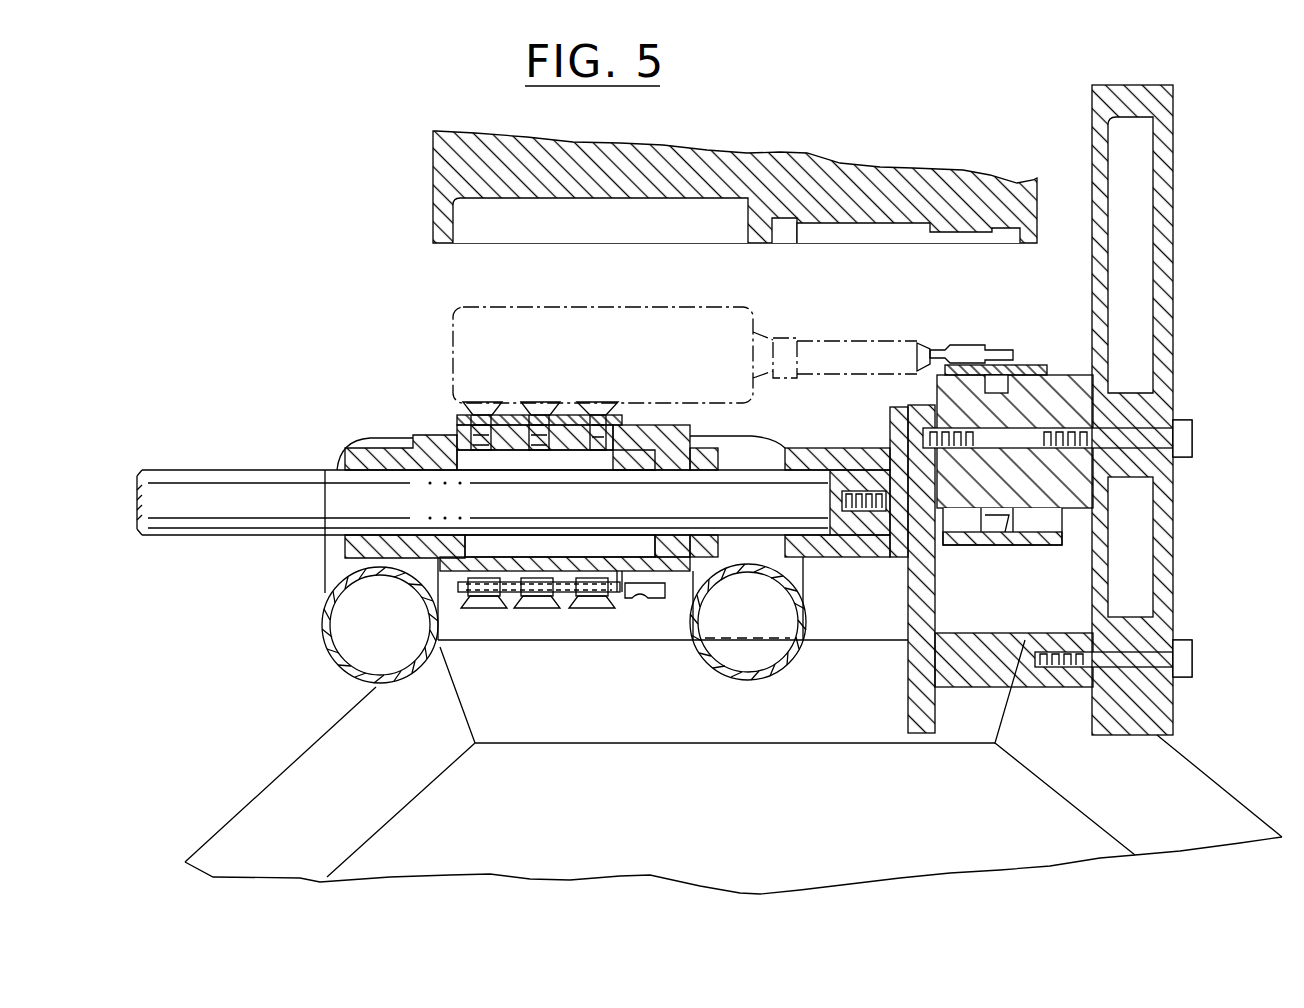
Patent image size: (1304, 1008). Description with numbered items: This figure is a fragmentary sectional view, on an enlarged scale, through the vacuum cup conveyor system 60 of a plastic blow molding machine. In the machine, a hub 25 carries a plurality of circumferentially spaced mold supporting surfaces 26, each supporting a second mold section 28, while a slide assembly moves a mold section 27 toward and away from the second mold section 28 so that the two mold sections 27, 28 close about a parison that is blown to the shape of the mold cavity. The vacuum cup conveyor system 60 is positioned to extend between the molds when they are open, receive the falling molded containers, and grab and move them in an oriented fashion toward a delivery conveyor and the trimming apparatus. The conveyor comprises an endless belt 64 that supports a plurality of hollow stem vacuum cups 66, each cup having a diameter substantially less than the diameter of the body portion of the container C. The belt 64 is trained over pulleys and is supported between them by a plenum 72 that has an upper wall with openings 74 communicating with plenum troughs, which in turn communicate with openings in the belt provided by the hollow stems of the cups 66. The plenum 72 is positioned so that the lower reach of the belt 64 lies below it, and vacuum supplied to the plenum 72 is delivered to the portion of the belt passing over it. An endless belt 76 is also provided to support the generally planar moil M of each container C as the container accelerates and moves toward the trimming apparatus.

The hub 25 is at (762, 832).
The mold supporting surface 26 is at (862, 745).
The mold section 27 is at (938, 182).
The second mold section 28 is at (355, 815).
The vacuum cup conveyor system 60 is at (616, 408).
The endless belt 64 is at (618, 592).
The hollow stem vacuum cup 66 is at (485, 609).
The plenum 72 is at (395, 447).
The openings 74 is at (595, 446).
The endless belt 76 is at (1028, 366).
The container C is at (718, 302).
The moil portion M is at (996, 341).